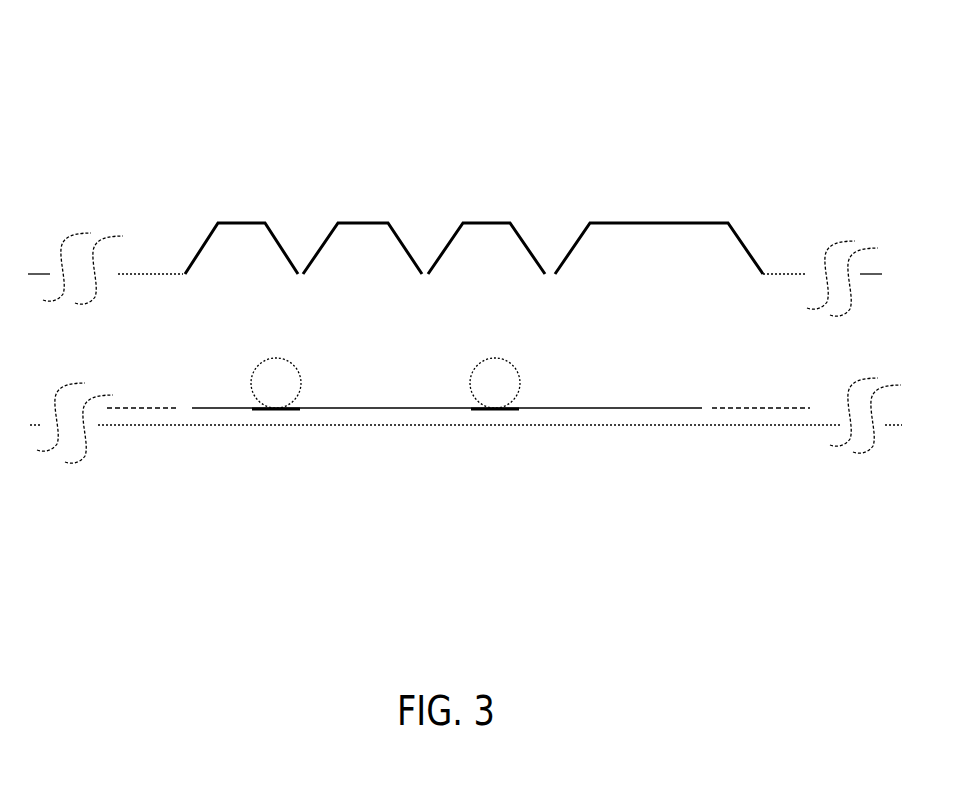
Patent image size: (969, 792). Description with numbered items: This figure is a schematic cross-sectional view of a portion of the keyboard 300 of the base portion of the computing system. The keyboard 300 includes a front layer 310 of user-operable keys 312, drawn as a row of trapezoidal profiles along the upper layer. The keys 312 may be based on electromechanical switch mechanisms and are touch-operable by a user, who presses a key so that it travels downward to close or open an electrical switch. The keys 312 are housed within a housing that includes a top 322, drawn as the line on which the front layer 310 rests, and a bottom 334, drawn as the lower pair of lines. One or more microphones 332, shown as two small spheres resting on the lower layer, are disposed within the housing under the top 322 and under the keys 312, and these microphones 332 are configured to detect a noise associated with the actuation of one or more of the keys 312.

The keyboard 300 is at (150, 31).
The front layer 310 is at (449, 200).
The user-operable keys 312 is at (382, 221).
The top 322 is at (163, 272).
The microphones 332 is at (300, 377).
The bottom 334 is at (347, 426).